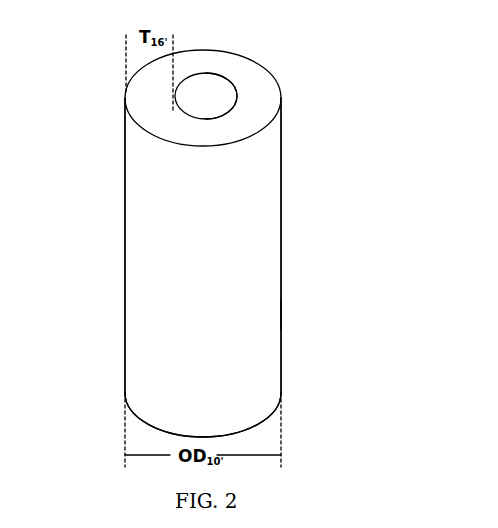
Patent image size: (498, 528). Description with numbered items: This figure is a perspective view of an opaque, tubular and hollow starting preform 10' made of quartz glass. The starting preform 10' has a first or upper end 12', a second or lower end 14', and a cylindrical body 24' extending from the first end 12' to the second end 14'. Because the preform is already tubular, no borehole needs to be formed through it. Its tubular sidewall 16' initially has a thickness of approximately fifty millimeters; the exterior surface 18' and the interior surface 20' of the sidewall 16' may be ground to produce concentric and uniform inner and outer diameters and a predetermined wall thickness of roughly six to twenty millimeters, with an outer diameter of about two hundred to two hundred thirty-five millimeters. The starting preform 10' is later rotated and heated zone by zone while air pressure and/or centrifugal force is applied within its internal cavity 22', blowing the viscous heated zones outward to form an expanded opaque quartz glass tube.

The starting preform 10' is at (289, 263).
The first end 12' is at (230, 98).
The second end 14' is at (163, 415).
The tubular sidewall 16' is at (316, 245).
The exterior surface 18' is at (300, 315).
The interior surface 20' is at (232, 74).
The internal cavity 22' is at (271, 96).
The cylindrical body 24' is at (239, 245).